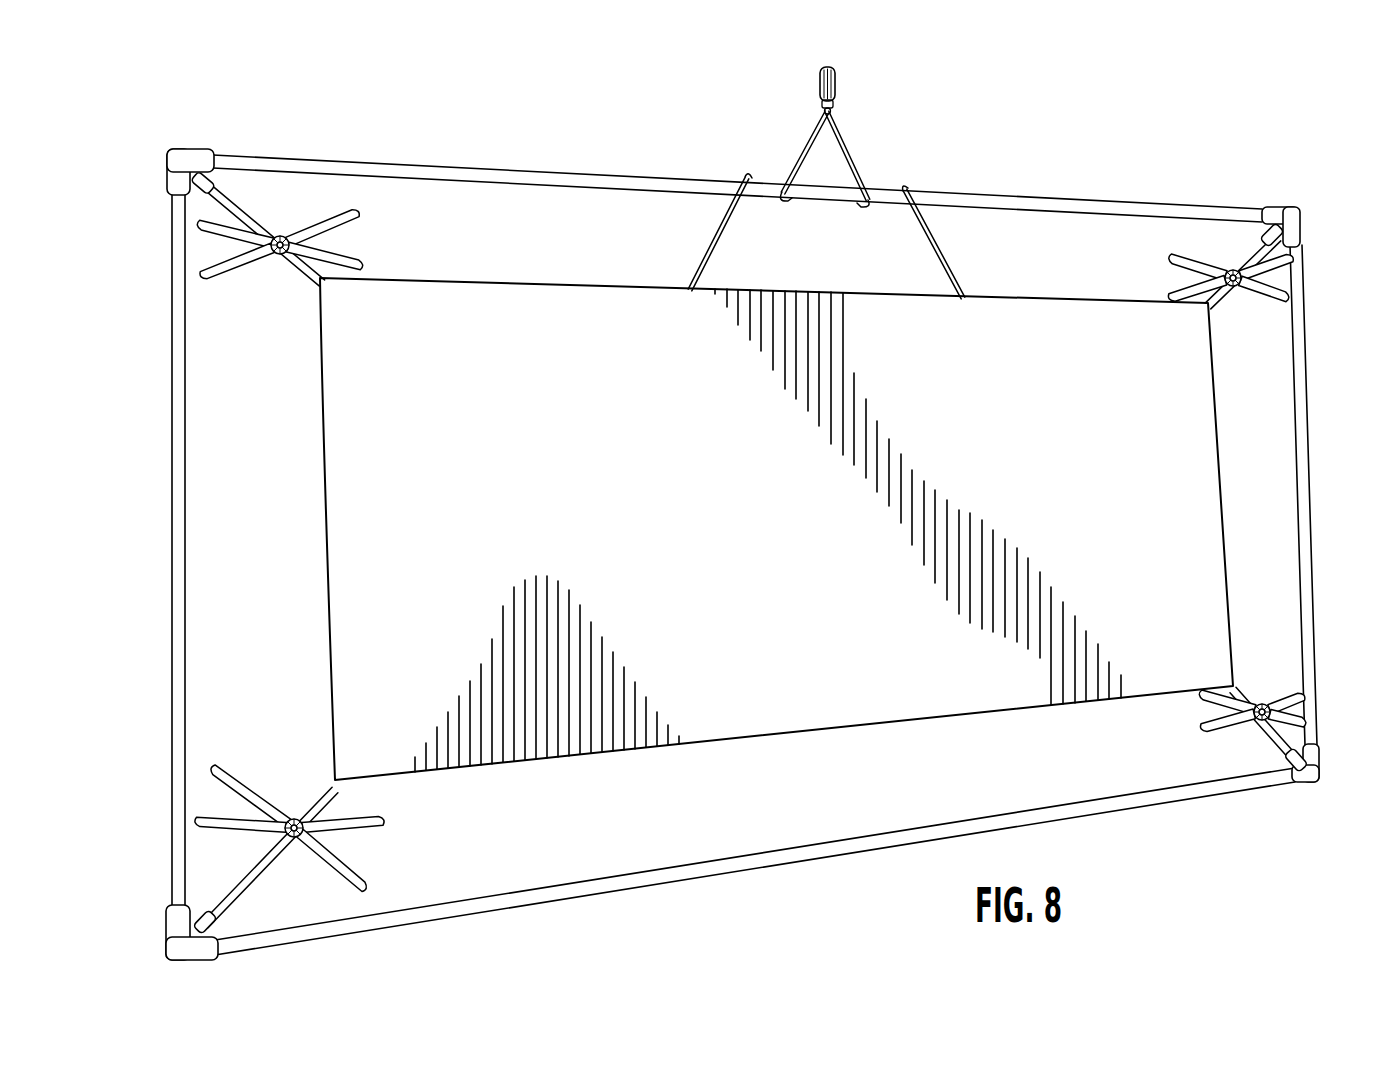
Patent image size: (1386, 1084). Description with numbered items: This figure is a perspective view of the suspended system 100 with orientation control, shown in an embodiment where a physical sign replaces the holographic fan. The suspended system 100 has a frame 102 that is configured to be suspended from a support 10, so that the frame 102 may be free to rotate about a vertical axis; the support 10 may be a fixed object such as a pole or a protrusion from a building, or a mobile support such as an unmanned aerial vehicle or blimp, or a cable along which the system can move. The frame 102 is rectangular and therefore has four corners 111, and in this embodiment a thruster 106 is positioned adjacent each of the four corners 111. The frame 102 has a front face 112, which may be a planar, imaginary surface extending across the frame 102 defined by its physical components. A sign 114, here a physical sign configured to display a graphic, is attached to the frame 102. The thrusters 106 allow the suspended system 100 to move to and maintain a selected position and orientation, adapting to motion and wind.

The suspended system 100 is at (352, 96).
The frame 102 is at (540, 178).
The thrusters 106 is at (272, 258).
The support 10 is at (830, 118).
The corners 111 is at (183, 163).
The front face 112 is at (373, 497).
The sign 114 is at (1168, 470).